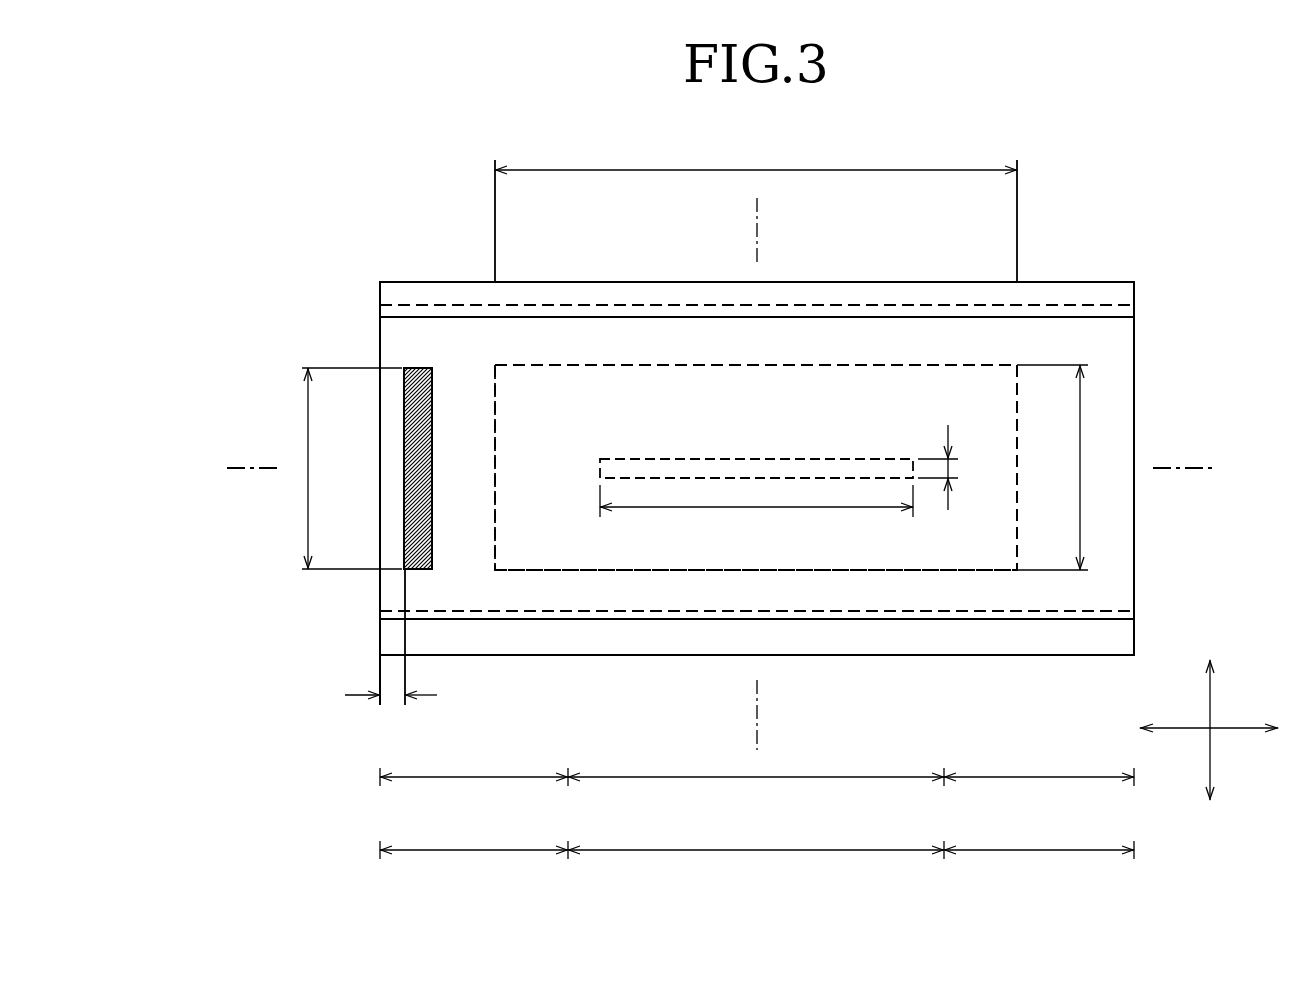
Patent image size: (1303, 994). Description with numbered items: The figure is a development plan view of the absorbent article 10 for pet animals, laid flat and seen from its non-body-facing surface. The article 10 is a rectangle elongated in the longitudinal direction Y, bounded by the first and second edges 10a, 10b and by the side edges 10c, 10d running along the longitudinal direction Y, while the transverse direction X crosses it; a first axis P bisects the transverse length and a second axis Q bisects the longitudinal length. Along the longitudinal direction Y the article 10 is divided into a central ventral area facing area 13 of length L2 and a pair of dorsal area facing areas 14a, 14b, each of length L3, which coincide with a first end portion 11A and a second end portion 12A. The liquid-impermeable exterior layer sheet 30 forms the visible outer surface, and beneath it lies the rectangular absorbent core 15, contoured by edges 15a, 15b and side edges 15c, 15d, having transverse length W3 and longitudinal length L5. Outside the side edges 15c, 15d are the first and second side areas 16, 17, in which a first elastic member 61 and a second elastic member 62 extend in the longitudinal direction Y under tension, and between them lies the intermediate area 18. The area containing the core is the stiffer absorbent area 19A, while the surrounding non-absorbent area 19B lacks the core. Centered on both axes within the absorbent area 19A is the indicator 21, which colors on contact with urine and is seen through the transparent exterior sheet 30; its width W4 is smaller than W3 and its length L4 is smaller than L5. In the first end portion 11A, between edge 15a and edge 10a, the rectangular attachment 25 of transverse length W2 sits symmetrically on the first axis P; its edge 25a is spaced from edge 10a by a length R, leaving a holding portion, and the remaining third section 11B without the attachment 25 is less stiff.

The absorbent article 10 is at (1122, 240).
The first edge 10a is at (380, 597).
The second edge 10b is at (1136, 574).
The side edge 10c is at (682, 283).
The side edge 10d is at (640, 656).
The first end portion 11A is at (484, 428).
The third section 11B is at (416, 336).
The second end portion 12A is at (1104, 382).
The ventral area facing area 13 is at (752, 779).
The dorsal area facing area 14a is at (468, 779).
The dorsal area facing area 14b is at (1038, 779).
The absorbent core 15 is at (938, 400).
The edge 15a is at (492, 490).
The edge 15b is at (1019, 483).
The side edge 15c is at (790, 364).
The side edge 15d is at (840, 571).
The first side area 16 is at (606, 335).
The second side area 17 is at (556, 604).
The intermediate area 18 is at (1112, 435).
The absorbent area 19A is at (966, 540).
The non-absorbent area 19B is at (1100, 601).
The indicator 21 is at (738, 466).
The attachment 25 is at (420, 573).
The edge 25a is at (404, 464).
The liquid-impermeable exterior layer sheet 30 is at (722, 590).
The first elastic member 61 is at (830, 306).
The second elastic member 62 is at (888, 621).
The length of the ventral area facing area L2 is at (752, 852).
The length of the dorsal area facing area L3 is at (468, 852).
The length of the indicator L4 is at (755, 509).
The length of the absorbent core L5 is at (757, 168).
The length of the attachment in the transverse direction W2 is at (308, 445).
The length of the absorbent core in the transverse direction W3 is at (1070, 467).
The length of the indicator in the transverse direction W4 is at (952, 466).
The first axis P is at (240, 470).
The second axis Q is at (758, 205).
The length of the separated portion R is at (392, 705).
The transverse direction X is at (1211, 700).
The longitudinal direction Y is at (1238, 730).